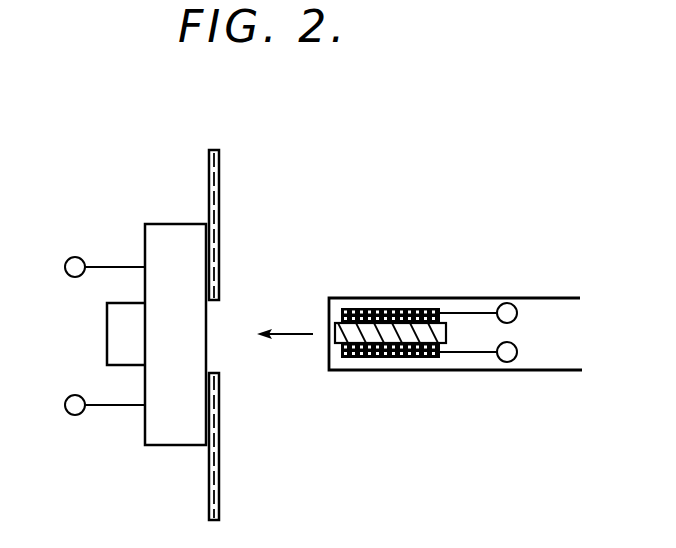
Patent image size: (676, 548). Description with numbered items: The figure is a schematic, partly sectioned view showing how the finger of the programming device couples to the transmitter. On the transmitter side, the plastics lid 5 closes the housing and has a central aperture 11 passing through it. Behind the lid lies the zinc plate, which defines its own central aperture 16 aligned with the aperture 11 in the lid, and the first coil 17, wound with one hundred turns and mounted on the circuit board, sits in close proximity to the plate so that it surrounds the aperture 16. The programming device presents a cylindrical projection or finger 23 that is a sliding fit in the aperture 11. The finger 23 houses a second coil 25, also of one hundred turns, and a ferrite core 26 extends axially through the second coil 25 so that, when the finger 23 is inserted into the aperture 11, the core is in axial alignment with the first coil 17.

The lid 5 is at (209, 172).
The central aperture 11 is at (117, 333).
The central aperture 16 is at (220, 353).
The first coil 17 is at (157, 425).
The finger 23 is at (540, 372).
The second coil 25 is at (393, 358).
The ferrite core 26 is at (372, 330).